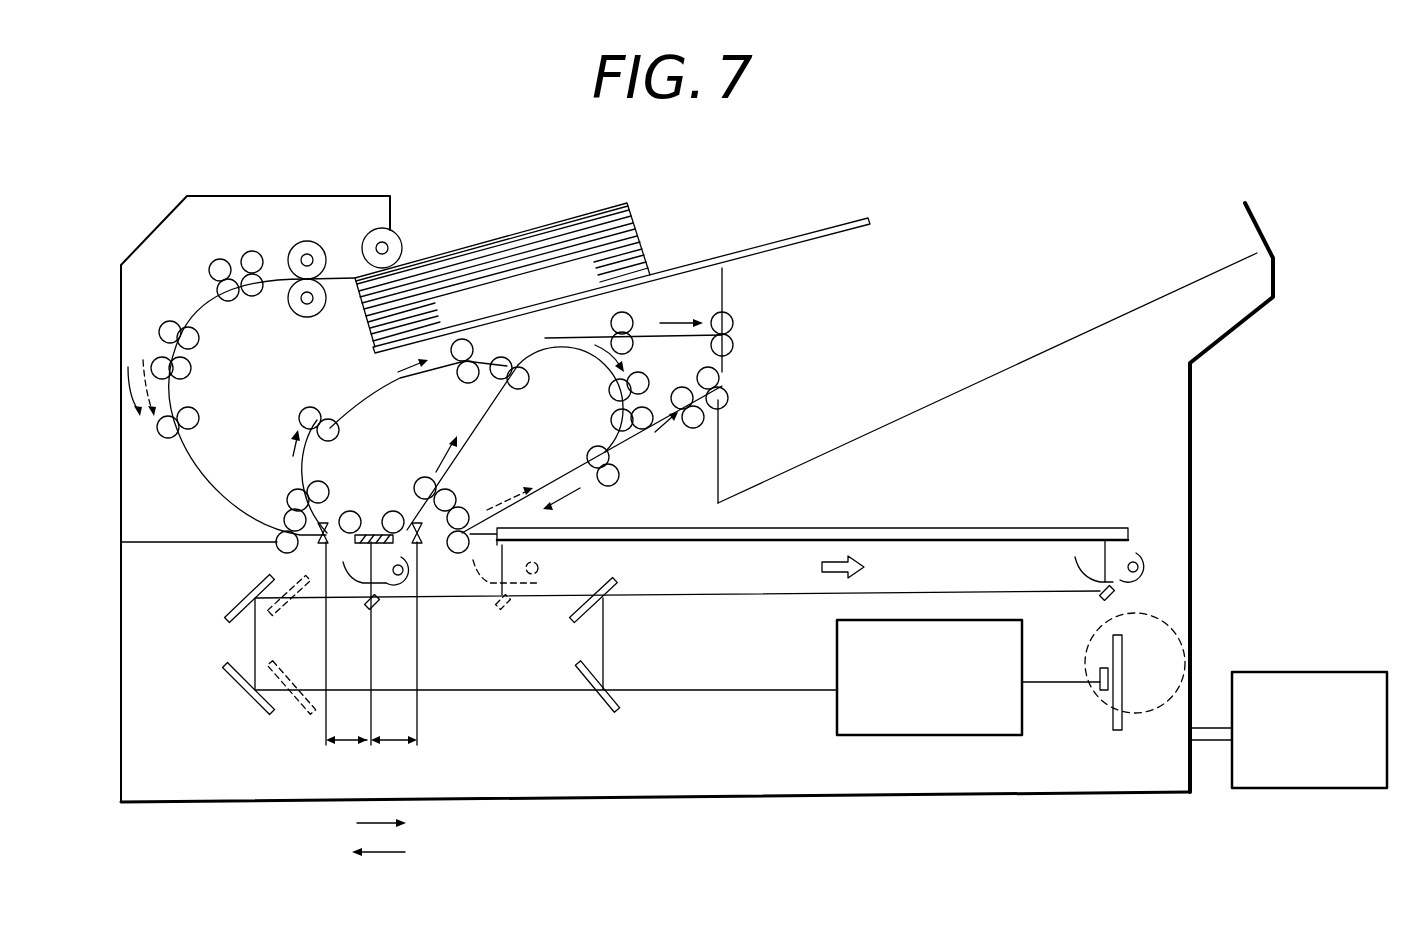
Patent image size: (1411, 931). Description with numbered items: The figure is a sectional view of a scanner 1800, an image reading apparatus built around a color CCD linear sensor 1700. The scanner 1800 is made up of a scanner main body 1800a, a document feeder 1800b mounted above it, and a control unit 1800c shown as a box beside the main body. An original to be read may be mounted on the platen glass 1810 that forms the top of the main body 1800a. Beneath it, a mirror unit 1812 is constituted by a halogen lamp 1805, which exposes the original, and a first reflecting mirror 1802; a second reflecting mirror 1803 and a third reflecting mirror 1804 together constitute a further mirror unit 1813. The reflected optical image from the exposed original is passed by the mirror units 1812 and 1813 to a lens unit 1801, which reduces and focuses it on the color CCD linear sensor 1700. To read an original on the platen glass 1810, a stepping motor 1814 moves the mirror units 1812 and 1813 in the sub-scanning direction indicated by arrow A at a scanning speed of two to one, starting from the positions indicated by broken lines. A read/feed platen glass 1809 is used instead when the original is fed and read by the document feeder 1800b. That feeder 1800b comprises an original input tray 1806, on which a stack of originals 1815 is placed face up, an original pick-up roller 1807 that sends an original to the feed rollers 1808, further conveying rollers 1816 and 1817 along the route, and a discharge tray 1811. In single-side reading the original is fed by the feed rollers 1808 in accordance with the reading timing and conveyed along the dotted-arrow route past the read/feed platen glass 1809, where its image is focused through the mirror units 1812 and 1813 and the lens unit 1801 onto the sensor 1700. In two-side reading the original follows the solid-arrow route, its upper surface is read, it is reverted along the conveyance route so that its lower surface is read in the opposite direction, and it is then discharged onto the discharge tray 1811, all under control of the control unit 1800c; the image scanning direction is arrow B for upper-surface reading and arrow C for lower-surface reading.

The scanner 1800 is at (595, 798).
The scanner main body 1800a is at (1101, 794).
The document feeder 1800b is at (1194, 444).
The control unit 1800c is at (1282, 790).
The lens unit 1801 is at (837, 703).
The color CCD linear sensor 1700 is at (1100, 688).
The stepping motor 1814 is at (1160, 631).
The first reflecting mirror 1802 is at (400, 580).
The halogen lamp 1805 is at (382, 603).
The mirror unit 1812 is at (489, 606).
The second reflecting mirror 1803 is at (233, 602).
The third reflecting mirror 1804 is at (235, 661).
The mirror unit 1813 is at (176, 631).
The original input tray 1806 is at (668, 262).
The sheet stack 1815 is at (560, 222).
The original pick-up roller 1807 is at (398, 238).
The feed rollers 1808 is at (307, 240).
The read/feed platen glass 1809 is at (374, 530).
The conveying roller pair 1816 is at (342, 512).
The conveying roller pair 1817 is at (420, 548).
The platen glass 1810 is at (985, 527).
The discharge tray 1811 is at (970, 385).